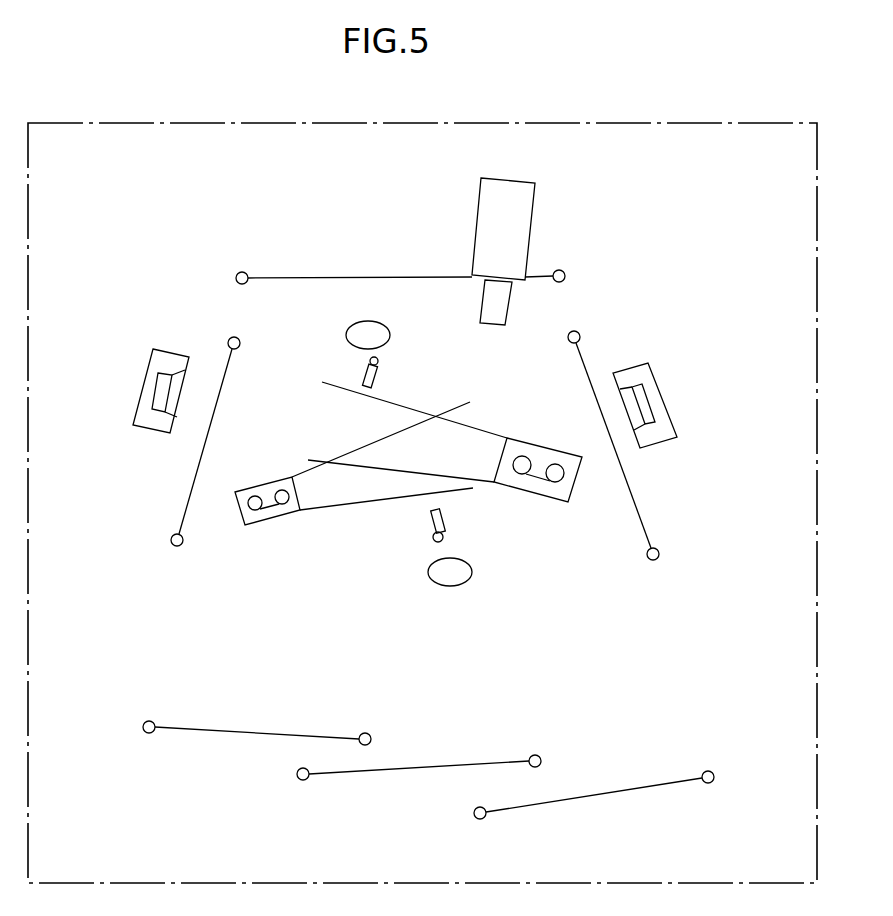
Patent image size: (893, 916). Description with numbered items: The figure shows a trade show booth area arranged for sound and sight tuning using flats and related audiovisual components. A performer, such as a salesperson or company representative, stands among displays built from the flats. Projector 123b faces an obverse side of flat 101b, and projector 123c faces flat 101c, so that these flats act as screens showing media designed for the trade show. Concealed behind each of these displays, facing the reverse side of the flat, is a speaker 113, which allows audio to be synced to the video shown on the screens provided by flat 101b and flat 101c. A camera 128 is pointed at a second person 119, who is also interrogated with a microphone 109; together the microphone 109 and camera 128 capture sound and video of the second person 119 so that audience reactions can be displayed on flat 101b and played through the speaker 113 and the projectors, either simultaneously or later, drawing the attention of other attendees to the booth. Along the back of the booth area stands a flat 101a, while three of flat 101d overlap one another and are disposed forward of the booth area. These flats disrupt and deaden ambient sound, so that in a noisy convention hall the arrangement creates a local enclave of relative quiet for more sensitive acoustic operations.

The flat 101a is at (368, 277).
The flat 101b is at (192, 472).
The flat 101c is at (638, 502).
The flat 101d is at (372, 770).
The camera 128 is at (517, 219).
The microphone 109 is at (365, 372).
The speaker 113 is at (148, 388).
The projector 123b is at (532, 498).
The projector 123c is at (257, 527).
The second person 119 is at (455, 582).